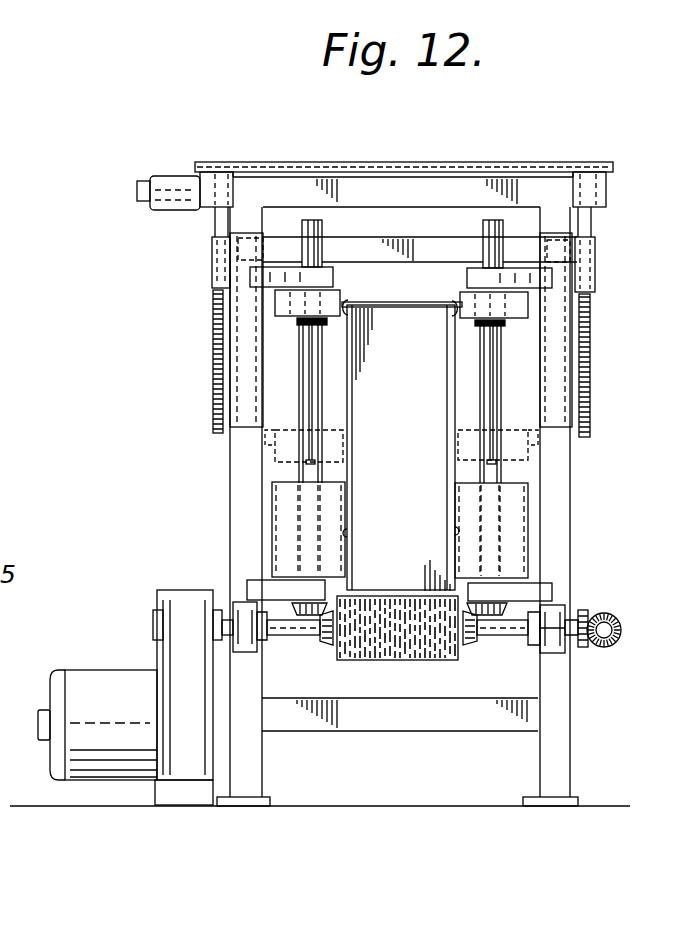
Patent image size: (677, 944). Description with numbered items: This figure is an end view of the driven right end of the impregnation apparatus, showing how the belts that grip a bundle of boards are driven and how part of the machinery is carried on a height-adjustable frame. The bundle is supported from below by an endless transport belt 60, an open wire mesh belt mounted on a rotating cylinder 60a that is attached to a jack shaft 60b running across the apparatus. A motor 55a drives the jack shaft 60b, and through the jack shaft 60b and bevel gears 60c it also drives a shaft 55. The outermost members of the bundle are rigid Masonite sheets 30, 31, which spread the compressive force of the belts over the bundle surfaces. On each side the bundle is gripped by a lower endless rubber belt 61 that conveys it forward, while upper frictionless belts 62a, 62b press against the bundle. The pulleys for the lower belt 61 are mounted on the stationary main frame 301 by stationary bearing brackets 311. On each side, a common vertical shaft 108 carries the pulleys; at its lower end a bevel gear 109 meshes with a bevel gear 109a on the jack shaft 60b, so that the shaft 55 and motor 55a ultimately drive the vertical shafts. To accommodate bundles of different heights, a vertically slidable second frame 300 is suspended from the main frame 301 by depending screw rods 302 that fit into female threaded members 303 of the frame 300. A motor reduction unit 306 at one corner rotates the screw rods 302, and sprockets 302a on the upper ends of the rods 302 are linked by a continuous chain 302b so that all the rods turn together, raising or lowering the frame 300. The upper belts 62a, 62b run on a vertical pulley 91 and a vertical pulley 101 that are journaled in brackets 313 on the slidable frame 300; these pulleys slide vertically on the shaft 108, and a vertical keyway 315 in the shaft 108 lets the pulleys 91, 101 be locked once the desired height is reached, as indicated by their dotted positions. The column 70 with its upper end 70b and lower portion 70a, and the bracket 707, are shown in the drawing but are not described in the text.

The continuous chain 302b is at (402, 163).
The sprockets 302a is at (237, 160).
The stationary main frame 301 is at (333, 185).
The motor reduction unit 306 is at (176, 175).
The female threaded members 303 is at (212, 262).
The screw rods 302 is at (213, 333).
The vertical pulley 101 is at (212, 295).
The vertically slidable second frame 300 is at (454, 226).
The brackets 313 is at (352, 259).
The upper frictionless belt 62b is at (300, 305).
The upper frictionless belt 62a is at (512, 311).
The vertical pulley 91 is at (545, 322).
The common vertical shaft 108 is at (300, 374).
The vertical keyway 315 is at (315, 400).
The mandrel column 70 is at (340, 357).
The column upper end 70b is at (450, 304).
The column lower pivot 70a is at (347, 533).
The rigid Masonite sheet 30 is at (345, 500).
The rigid Masonite sheet 31 is at (523, 505).
The endless rubber belt 61 is at (287, 528).
The bearing brackets 707 is at (273, 556).
The stationary bearing brackets 311 is at (240, 604).
The bevel gear 109 is at (300, 604).
The bevel gear 109a is at (322, 646).
The endless transport belt 60 is at (393, 592).
The cylinder 60a is at (470, 654).
The jack shaft 60b is at (502, 636).
The bevel gears 60c is at (588, 610).
The shaft 55 is at (622, 643).
The motor 55a is at (103, 652).